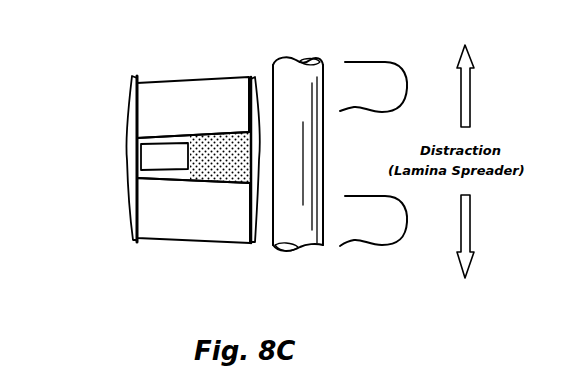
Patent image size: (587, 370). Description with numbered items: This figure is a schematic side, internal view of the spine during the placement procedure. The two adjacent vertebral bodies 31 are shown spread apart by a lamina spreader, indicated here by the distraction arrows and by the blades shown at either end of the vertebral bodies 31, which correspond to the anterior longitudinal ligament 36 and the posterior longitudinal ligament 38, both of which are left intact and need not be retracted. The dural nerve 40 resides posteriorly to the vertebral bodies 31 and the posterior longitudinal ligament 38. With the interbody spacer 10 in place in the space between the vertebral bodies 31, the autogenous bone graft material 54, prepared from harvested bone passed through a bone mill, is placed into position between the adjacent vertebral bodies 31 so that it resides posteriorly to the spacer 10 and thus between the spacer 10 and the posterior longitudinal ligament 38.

The interbody spacer 10 is at (147, 163).
The vertebral bodies 31 is at (162, 95).
The anterior longitudinal ligament 36 is at (133, 118).
The posterior longitudinal ligament 38 is at (255, 105).
The dural nerve 40 is at (308, 250).
The autogenous bone graft material 54 is at (217, 152).